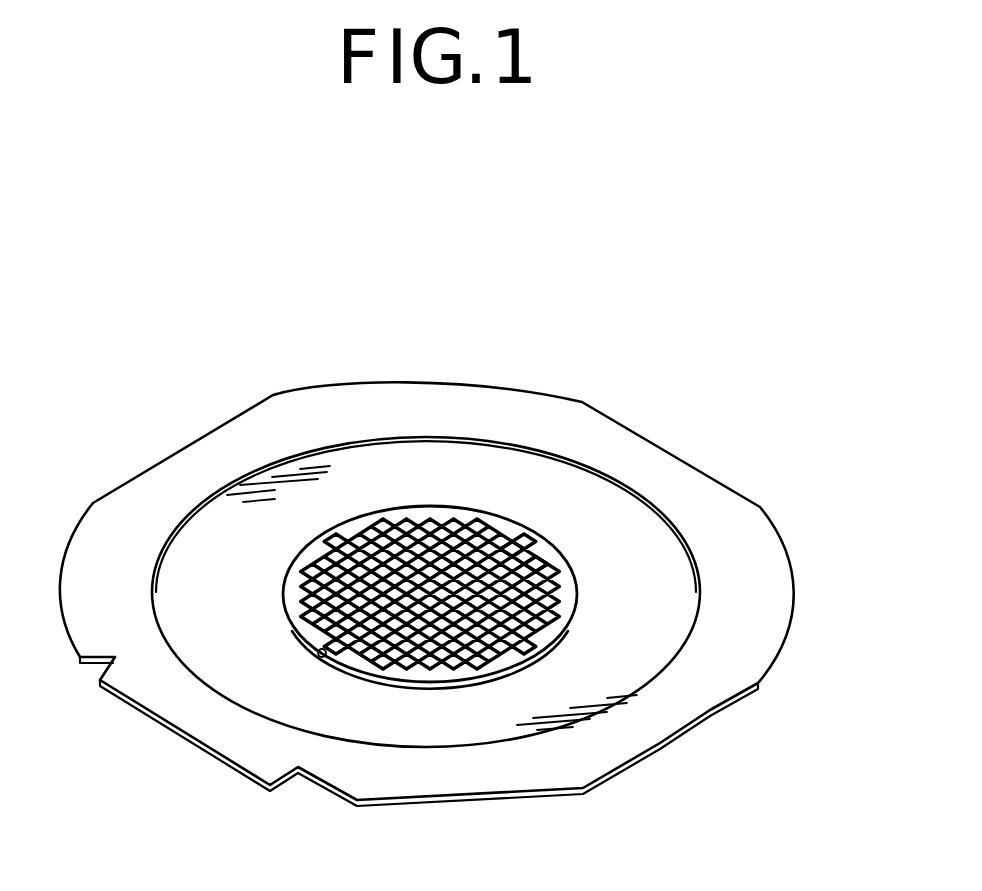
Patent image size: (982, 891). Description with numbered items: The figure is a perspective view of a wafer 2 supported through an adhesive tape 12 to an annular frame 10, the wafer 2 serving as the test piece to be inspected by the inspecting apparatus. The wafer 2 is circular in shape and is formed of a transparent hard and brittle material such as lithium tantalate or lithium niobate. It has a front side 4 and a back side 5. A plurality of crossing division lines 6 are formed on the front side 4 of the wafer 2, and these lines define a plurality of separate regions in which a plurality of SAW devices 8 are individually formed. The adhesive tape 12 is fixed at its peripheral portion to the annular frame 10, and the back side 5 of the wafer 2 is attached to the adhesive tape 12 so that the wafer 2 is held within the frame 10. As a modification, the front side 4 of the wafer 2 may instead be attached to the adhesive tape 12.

The wafer 2 is at (376, 500).
The front side 4 is at (520, 538).
The back side 5 is at (435, 690).
The division lines 6 is at (473, 512).
The SAW devices 8 is at (550, 568).
The annular frame 10 is at (758, 562).
The adhesive tape 12 is at (195, 562).